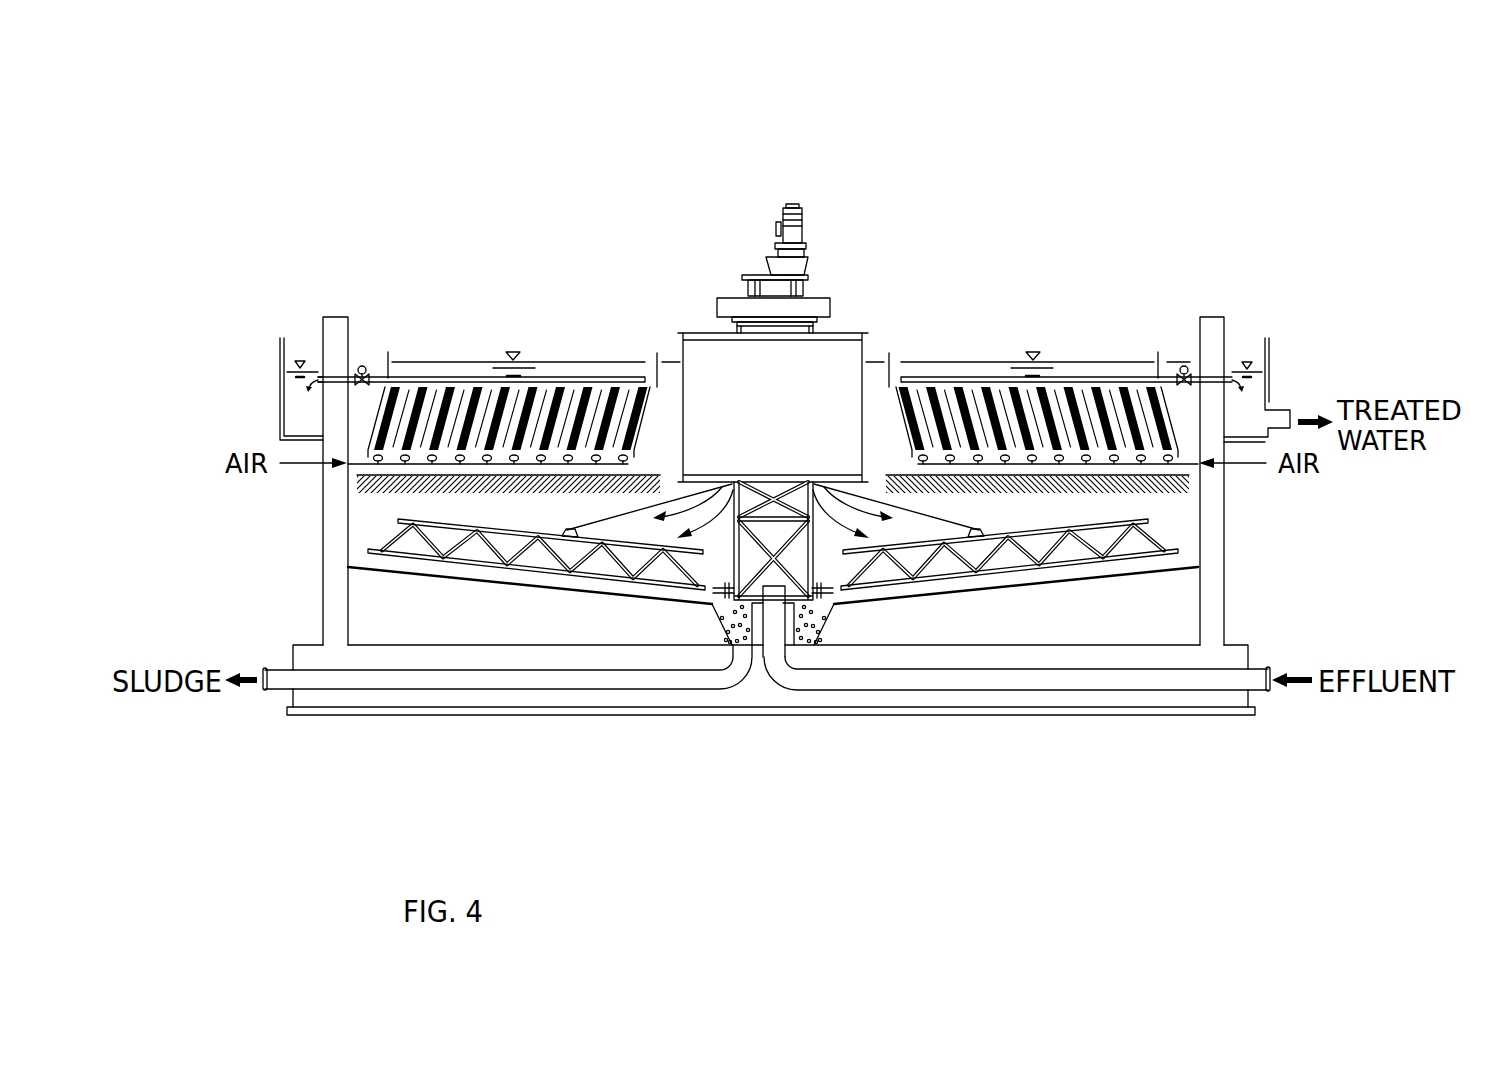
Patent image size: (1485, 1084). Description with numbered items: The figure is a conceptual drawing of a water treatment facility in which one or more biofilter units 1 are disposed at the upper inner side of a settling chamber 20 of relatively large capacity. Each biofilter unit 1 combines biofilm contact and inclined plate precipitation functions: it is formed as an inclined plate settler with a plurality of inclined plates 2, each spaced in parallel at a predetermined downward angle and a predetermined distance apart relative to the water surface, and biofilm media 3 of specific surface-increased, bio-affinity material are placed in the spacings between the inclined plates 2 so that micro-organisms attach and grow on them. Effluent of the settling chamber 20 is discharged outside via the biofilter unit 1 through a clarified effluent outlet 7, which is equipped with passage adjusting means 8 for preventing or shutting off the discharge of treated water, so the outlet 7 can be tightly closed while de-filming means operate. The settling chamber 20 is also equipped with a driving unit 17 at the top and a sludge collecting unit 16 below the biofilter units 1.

The biofilter unit 1 is at (887, 362).
The inclined plates 2 is at (1007, 390).
The biofilm media 3 is at (940, 390).
The clarified effluent outlet 7 is at (1212, 378).
The passage adjusting means 8 is at (1185, 373).
The sludge collecting unit 16 is at (390, 540).
The driving unit 17 is at (802, 236).
The settling chamber 20 is at (1218, 540).